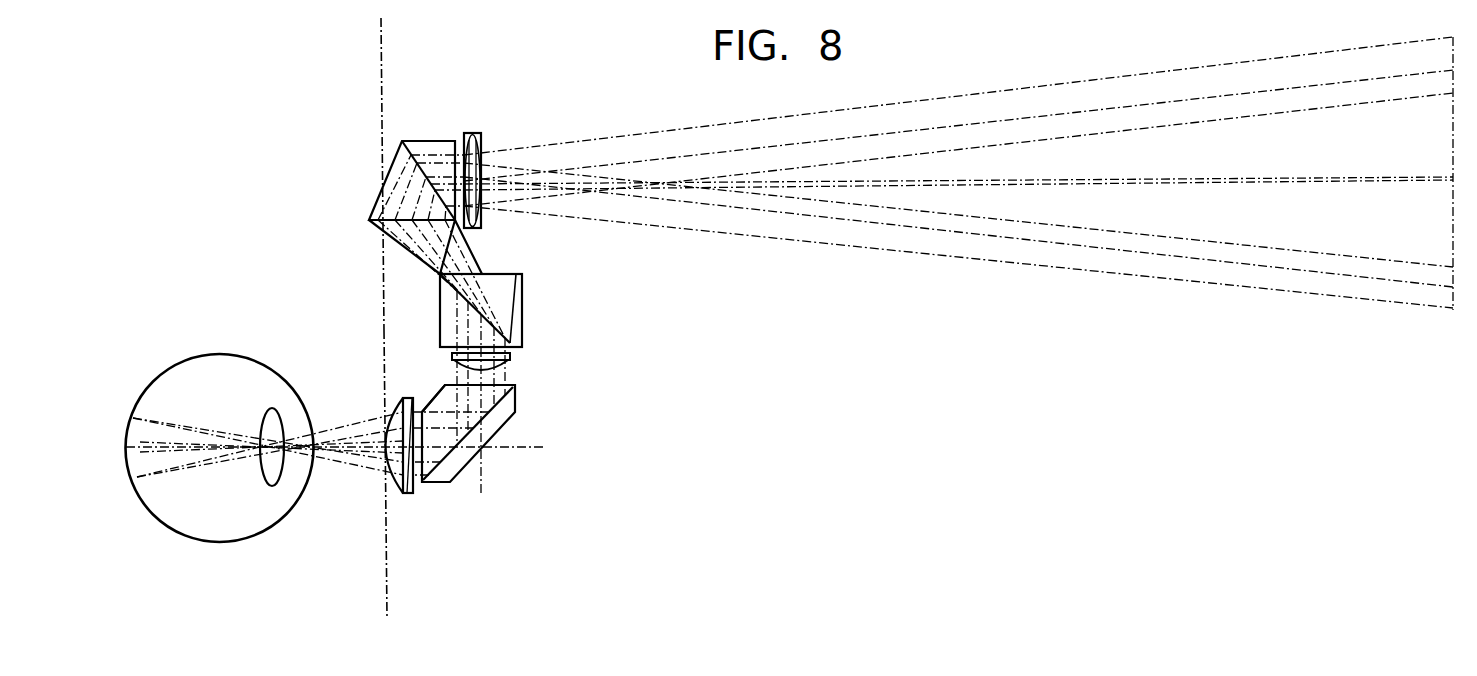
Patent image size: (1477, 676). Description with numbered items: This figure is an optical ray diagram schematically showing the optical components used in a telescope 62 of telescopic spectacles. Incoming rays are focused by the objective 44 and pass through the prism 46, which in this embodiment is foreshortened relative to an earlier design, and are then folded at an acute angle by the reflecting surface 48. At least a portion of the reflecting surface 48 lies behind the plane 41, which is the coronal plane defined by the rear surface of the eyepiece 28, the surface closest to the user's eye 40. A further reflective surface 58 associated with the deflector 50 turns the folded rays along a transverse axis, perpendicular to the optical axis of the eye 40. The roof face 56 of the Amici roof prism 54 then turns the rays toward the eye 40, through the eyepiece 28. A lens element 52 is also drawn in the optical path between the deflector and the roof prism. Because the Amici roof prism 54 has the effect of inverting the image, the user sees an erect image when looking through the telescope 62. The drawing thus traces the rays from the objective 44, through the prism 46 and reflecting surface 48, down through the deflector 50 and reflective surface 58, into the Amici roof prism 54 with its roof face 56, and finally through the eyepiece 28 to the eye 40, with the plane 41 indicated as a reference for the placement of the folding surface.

The telescope 62 is at (358, 90).
The first coronal plane 41 is at (390, 595).
The eye 40 is at (270, 530).
The eyepiece 28 is at (408, 494).
The roof face 56 is at (505, 427).
The Amici roof prism 54 is at (440, 393).
The lens 52 is at (511, 357).
The deflector 50 is at (522, 300).
The reflective surface 58 is at (470, 248).
The prism 46 is at (433, 137).
The reflecting surface 48 is at (392, 161).
The objective 44 is at (477, 137).